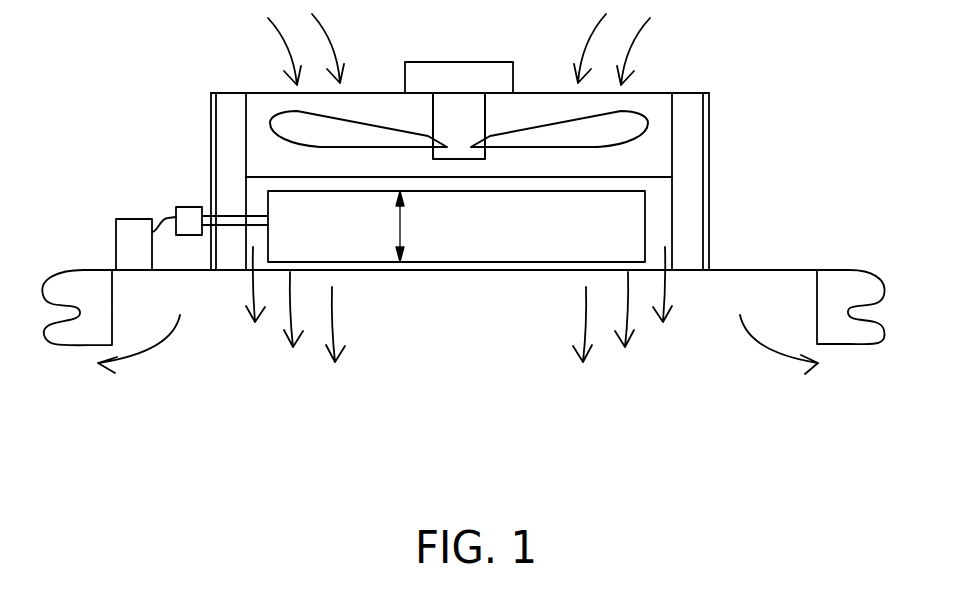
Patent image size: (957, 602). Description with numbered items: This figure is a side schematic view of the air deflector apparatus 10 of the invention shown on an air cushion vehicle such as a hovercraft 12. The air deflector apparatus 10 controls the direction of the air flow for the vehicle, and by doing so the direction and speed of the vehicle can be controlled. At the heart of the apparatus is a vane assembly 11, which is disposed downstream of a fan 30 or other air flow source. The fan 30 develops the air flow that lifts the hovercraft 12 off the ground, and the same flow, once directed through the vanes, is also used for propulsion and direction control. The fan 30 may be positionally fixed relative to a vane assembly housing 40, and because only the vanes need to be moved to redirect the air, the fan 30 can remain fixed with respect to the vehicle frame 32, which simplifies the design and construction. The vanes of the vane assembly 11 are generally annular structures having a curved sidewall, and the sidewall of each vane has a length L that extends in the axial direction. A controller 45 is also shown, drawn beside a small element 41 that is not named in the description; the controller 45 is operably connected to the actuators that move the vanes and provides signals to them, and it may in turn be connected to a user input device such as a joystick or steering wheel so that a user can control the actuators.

The air deflector apparatus 10 is at (160, 165).
The vane assembly 11 is at (211, 160).
The fan 30 is at (626, 125).
The vane assembly housing 40 is at (709, 195).
The motor 41 is at (187, 214).
The controller 45 is at (115, 229).
The vehicle frame 32 is at (768, 270).
The hovercraft 12 is at (829, 280).
The length L is at (400, 222).